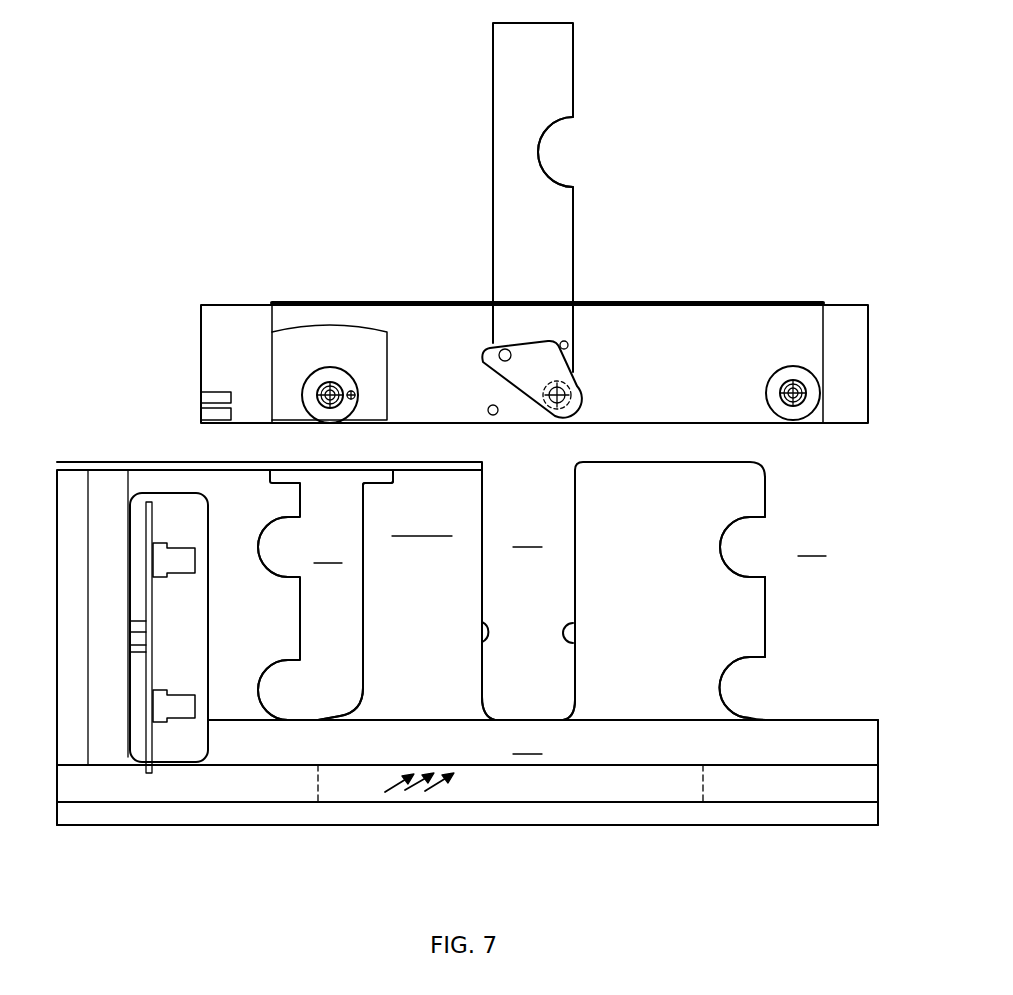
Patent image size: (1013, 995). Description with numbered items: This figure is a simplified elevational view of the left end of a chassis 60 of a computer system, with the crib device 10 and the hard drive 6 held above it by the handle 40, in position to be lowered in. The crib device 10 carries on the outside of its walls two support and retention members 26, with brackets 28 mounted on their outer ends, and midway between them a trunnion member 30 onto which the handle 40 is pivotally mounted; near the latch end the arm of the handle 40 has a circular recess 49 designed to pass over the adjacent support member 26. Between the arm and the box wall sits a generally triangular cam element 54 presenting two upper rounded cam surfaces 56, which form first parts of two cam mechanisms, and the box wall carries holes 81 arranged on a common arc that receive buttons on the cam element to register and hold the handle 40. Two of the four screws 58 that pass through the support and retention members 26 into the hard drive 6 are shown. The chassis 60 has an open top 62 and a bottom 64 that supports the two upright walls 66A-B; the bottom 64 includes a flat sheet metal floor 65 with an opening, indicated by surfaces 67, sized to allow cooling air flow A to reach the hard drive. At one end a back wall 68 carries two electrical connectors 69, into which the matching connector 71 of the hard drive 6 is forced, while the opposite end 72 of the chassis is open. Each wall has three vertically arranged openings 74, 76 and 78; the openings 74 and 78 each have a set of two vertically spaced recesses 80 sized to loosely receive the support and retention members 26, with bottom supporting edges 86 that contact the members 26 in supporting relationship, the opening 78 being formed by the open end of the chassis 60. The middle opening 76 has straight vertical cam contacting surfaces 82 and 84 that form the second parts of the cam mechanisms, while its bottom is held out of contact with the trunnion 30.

The hard drive 6 is at (555, 321).
The crib device 10 is at (714, 330).
The support and retention members 26 is at (596, 413).
The brackets 28 is at (347, 335).
The trunnion members 30 is at (575, 373).
The handle 40 is at (493, 96).
The circular recesses 49 is at (557, 150).
The cam elements 54 is at (538, 392).
The cam surfaces 56 is at (485, 350).
The screws 58 is at (345, 402).
The chassis 60 is at (710, 591).
The open top 62 is at (448, 619).
The bottom 64 is at (543, 737).
The floor 65 is at (658, 790).
The upright walls 66A-B is at (429, 595).
The surfaces 67 is at (316, 782).
The back wall 68 is at (64, 562).
The electrical connector 69 is at (178, 557).
The matching connector 71 is at (203, 398).
The opposite end 72 is at (767, 612).
The opening 74 is at (325, 595).
The opening 76 is at (528, 621).
The opening 78 is at (795, 567).
The recesses 80 is at (262, 548).
The holes 81 is at (497, 358).
The cam contacting surface 82 is at (482, 626).
The cam contacting surface 84 is at (585, 633).
The bottom supporting edges 86 is at (320, 718).
The air flow A is at (430, 794).